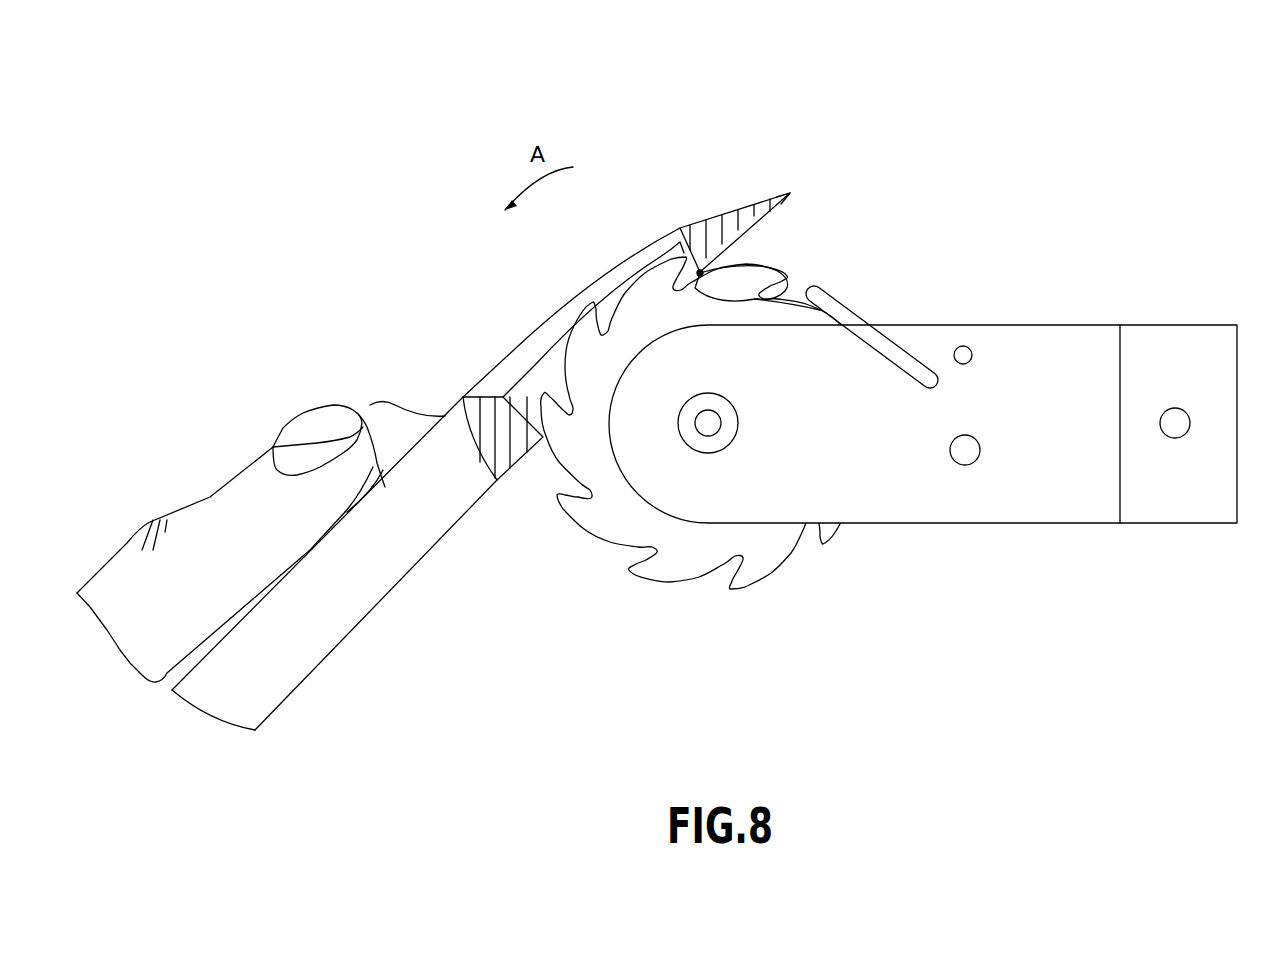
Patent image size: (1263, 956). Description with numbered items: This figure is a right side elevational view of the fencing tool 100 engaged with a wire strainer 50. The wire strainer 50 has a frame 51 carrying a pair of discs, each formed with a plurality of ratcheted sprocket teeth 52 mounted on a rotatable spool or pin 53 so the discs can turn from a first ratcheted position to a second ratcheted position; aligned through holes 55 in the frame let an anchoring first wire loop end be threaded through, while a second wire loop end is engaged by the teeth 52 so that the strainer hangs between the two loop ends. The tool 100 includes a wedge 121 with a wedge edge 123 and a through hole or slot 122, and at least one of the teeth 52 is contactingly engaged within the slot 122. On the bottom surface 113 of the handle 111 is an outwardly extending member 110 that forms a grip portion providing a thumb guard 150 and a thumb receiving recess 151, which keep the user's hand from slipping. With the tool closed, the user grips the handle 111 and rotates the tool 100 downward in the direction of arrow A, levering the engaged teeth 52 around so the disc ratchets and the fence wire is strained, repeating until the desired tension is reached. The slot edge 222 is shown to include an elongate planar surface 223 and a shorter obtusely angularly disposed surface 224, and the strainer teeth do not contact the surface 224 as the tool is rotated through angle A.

The wire strainer 50 is at (1025, 323).
The frame 51 is at (983, 498).
The ratcheted sprocket teeth 52 is at (607, 530).
The rotatable spool or pin 53 is at (708, 453).
The aligned through holes 55 is at (1177, 430).
The fencing tool 100 is at (334, 509).
The outwardly extending member 110 is at (366, 408).
The handle 111 is at (277, 687).
The bottom surface 113 is at (460, 400).
The wedge 121 is at (730, 212).
The through hole or slot 122 is at (654, 254).
The wedge edge 123 is at (780, 192).
The thumb guard 150 is at (273, 447).
The thumb receiving recess 151 is at (345, 512).
The slot edge 222 is at (786, 284).
The elongate planar surface 223 is at (703, 272).
The shorter obtusely angularly disposed surface 224 is at (680, 250).